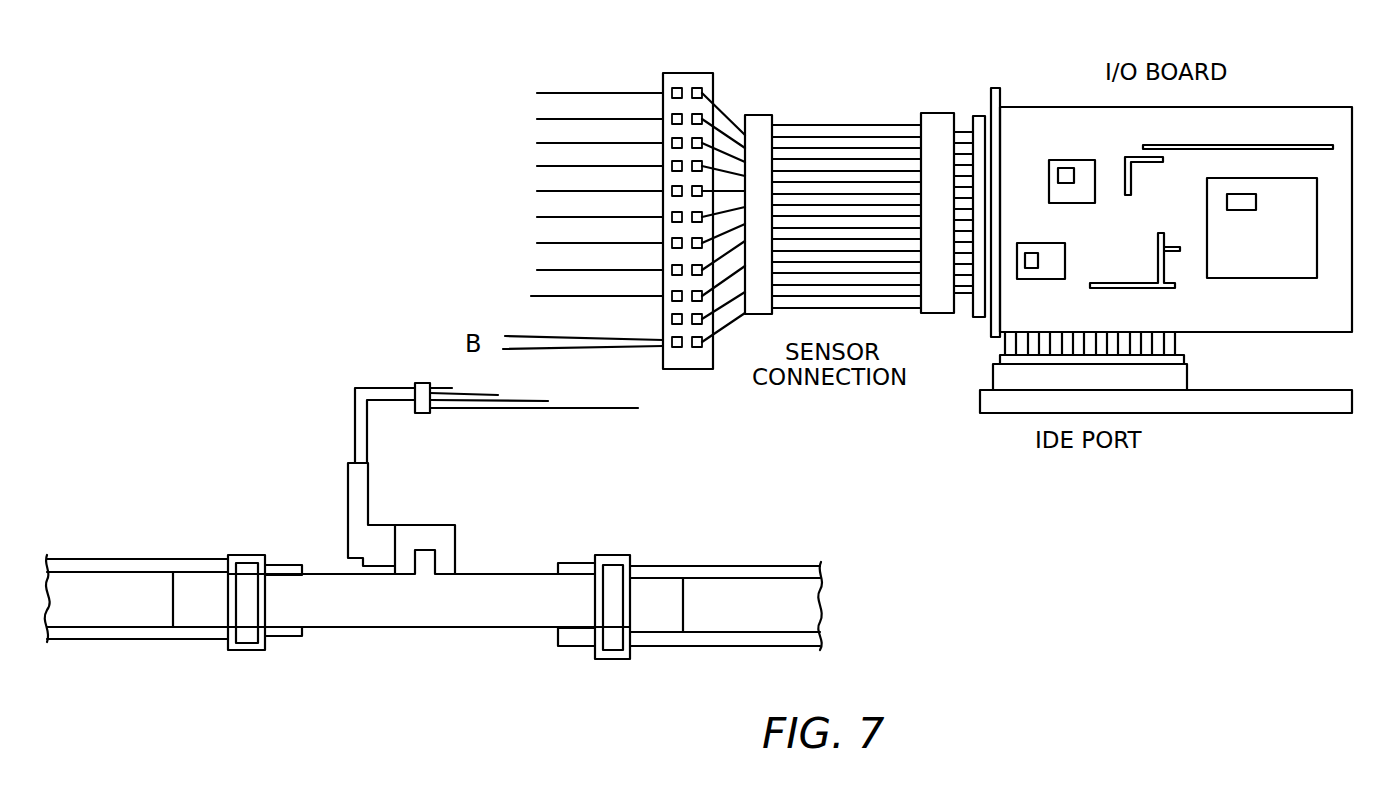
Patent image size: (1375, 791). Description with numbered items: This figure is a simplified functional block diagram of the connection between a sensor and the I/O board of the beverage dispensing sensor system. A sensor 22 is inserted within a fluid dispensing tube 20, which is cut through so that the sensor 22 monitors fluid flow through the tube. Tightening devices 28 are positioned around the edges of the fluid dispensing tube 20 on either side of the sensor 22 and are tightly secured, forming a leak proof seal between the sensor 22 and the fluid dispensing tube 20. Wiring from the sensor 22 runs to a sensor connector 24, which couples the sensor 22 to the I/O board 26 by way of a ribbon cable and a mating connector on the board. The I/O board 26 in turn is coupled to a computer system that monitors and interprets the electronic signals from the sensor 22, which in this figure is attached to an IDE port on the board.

The fluid dispensing tube 20 is at (128, 559).
The sensor 22 is at (503, 574).
The sensor connector 24 is at (708, 73).
The I/O board 26 is at (1027, 106).
The tightening device 28 is at (245, 555).